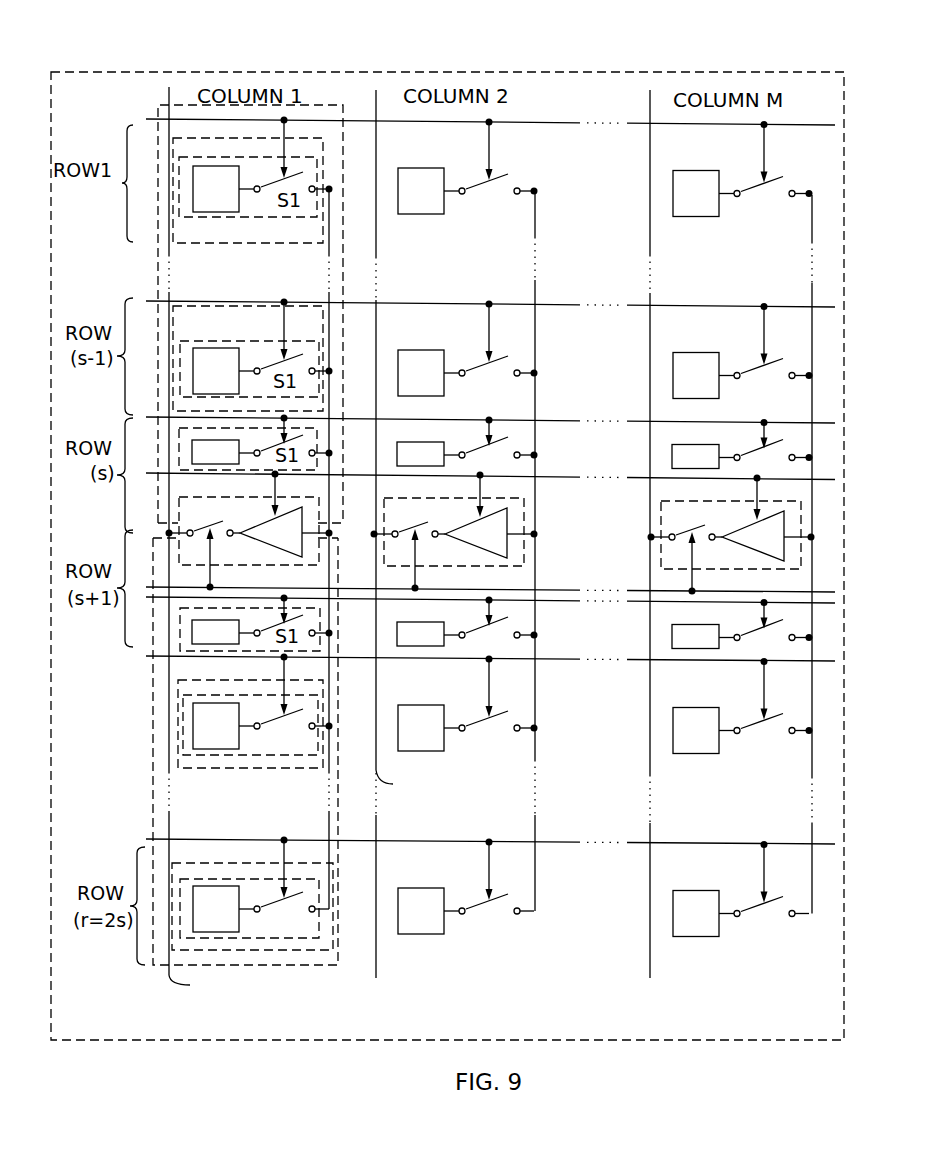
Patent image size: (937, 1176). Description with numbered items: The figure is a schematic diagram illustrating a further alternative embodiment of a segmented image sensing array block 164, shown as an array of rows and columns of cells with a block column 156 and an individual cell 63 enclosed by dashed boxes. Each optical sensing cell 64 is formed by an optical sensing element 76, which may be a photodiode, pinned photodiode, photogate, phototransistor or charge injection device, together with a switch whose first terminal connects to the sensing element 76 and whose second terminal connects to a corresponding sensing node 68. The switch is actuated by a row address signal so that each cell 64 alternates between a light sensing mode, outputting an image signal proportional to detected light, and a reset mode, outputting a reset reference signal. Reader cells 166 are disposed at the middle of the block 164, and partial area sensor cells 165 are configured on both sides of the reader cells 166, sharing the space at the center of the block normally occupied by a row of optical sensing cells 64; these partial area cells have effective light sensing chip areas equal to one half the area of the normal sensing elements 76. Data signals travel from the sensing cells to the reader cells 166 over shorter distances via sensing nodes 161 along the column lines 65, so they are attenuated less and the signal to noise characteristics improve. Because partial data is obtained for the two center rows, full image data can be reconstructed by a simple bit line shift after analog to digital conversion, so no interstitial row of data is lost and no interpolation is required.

The segmented image sensing array block 164 is at (142, 30).
The column of pixel cells 156 is at (158, 290).
The pixel cell 63 is at (183, 138).
The optical sensing cell 64 is at (248, 217).
The optical sensing element 76 is at (228, 199).
The sensing node 161 is at (232, 463).
The reader cell 166 is at (248, 566).
The partial area sensor cell 165 is at (250, 651).
The sensing node 68 is at (329, 288).
The column bus line 65 is at (409, 542).